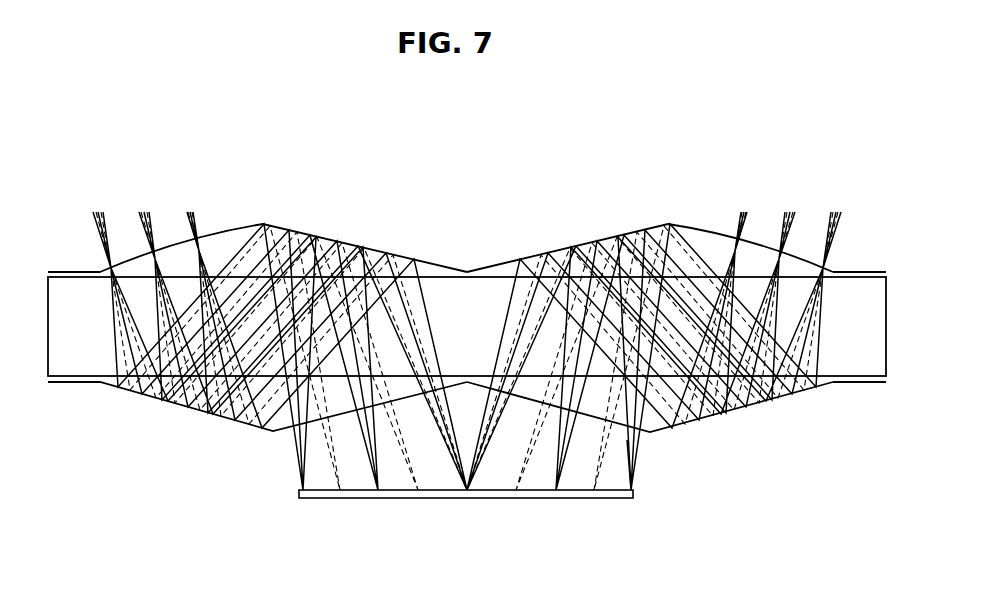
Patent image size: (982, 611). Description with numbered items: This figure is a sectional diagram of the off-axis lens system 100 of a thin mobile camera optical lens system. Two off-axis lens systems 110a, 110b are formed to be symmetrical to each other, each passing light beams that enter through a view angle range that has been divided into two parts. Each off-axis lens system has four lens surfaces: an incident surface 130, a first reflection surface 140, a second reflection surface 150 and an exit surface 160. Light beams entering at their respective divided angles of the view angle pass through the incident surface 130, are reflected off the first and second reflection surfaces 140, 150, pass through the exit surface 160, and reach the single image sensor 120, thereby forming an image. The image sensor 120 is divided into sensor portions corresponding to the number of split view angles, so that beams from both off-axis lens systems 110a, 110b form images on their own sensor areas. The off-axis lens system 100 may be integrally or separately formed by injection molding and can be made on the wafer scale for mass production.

The off-axis lens system 100 is at (109, 119).
The first off-axis lens system 110a is at (172, 236).
The second off-axis lens system 110b is at (758, 236).
The image sensor 120 is at (488, 500).
The incident surface 130 is at (702, 228).
The first reflection surface 140 is at (750, 407).
The second reflection surface 150 is at (610, 245).
The exit surface 160 is at (632, 457).